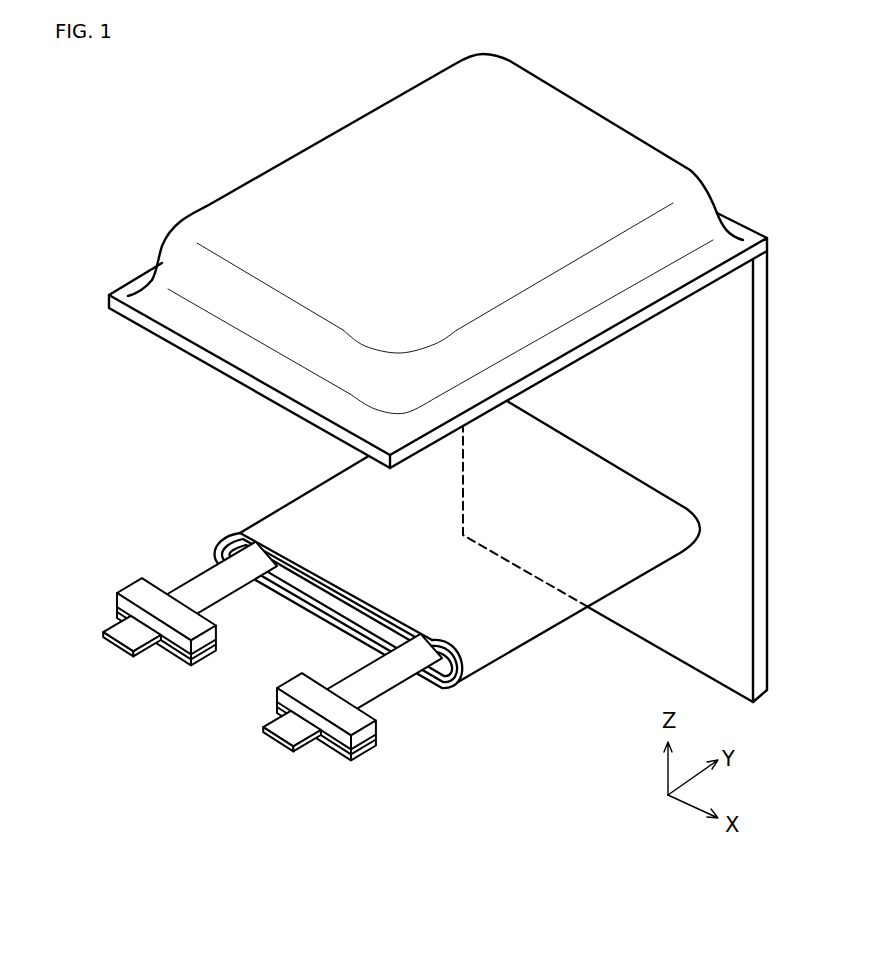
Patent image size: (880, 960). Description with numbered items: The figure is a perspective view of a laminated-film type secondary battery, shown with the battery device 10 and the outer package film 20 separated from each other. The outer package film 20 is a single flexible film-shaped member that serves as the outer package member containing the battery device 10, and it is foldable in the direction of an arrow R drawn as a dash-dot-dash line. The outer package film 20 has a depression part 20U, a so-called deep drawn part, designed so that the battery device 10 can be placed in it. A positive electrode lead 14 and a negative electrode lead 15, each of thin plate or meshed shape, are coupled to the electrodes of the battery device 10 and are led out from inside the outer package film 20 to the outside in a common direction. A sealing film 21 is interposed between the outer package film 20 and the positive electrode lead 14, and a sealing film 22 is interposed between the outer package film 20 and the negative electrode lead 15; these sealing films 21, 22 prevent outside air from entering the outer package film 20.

The battery device 10 is at (535, 662).
The positive electrode lead 14 is at (127, 635).
The negative electrode lead 15 is at (288, 727).
The outer package film 20 is at (582, 130).
The depression part 20U is at (335, 165).
The sealing film 21 is at (132, 587).
The sealing film 22 is at (357, 720).
The arrow R is at (720, 407).